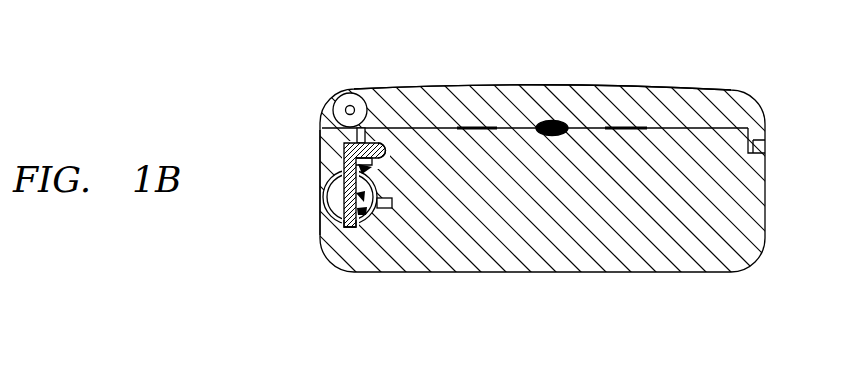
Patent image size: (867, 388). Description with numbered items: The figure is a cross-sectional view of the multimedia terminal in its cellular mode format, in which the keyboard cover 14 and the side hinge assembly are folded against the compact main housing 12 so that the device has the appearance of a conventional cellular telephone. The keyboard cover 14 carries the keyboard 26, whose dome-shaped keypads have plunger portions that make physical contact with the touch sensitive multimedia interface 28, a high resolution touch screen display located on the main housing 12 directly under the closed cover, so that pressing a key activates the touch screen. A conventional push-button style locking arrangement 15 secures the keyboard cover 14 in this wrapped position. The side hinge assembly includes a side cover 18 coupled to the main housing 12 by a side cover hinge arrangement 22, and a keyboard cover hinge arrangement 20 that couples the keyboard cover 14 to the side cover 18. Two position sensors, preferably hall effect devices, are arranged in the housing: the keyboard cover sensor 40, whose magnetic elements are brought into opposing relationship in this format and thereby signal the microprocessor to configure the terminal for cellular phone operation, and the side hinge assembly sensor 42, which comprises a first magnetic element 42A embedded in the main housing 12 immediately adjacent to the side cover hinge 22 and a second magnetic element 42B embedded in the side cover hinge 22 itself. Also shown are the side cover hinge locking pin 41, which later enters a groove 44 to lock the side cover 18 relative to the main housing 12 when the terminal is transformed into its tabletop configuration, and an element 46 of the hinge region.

The main housing 12 is at (766, 215).
The keyboard cover 14 is at (643, 86).
The push-button style locking arrangement 15 is at (766, 135).
The side cover 18 is at (321, 160).
The keyboard cover hinge arrangement 20 is at (334, 98).
The side cover hinge arrangement 22 is at (324, 193).
The keyboard 26 is at (484, 130).
The touch sensitive multimedia interface 28 is at (690, 127).
The keyboard cover sensor 40 is at (554, 120).
The side cover hinge locking pin 41 is at (346, 228).
The side hinge assembly sensor 42 is at (380, 144).
The first magnetic element 42A is at (373, 166).
The second magnetic element 42B is at (361, 229).
The groove 44 is at (389, 208).
The latch arm end 46 is at (385, 156).